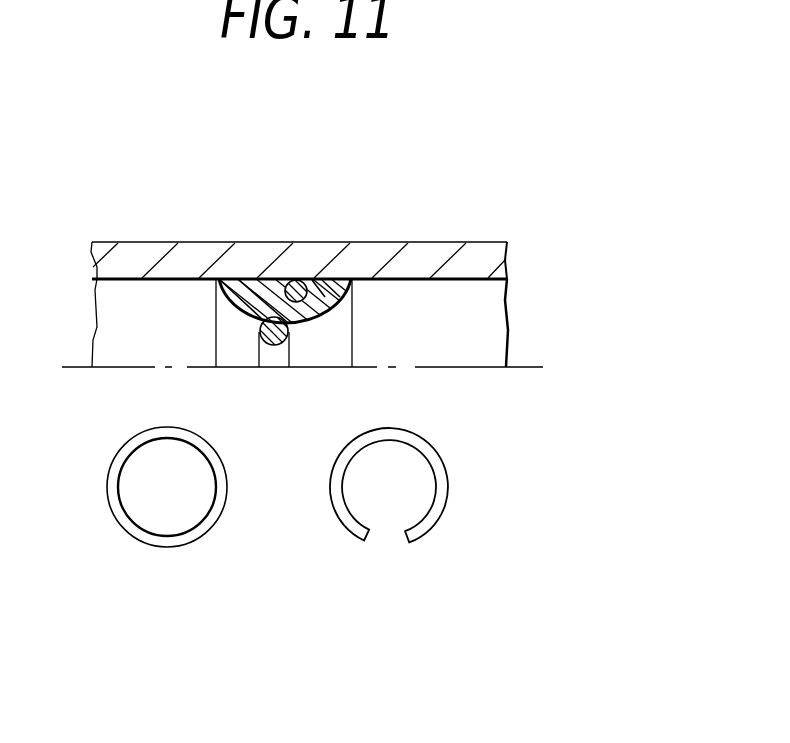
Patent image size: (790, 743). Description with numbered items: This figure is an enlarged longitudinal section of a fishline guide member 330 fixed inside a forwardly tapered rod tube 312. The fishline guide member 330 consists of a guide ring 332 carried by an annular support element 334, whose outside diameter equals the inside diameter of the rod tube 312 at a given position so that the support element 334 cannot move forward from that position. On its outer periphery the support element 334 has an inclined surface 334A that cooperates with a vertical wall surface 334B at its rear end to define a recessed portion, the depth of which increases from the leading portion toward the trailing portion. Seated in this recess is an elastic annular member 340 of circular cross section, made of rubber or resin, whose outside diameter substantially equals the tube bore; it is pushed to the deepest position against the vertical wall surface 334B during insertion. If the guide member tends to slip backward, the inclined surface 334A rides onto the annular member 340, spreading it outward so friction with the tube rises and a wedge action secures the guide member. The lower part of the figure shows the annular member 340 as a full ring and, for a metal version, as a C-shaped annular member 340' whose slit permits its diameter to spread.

The rod tube 312 is at (438, 252).
The fishline guide member 330 is at (445, 310).
The guide ring 332 is at (288, 342).
The annular support element 334 is at (408, 276).
The inclined surface 334A is at (263, 290).
The vertical wall surface 334B is at (288, 280).
The annular member 340 is at (223, 381).
The C-shaped annular member 340' is at (361, 506).